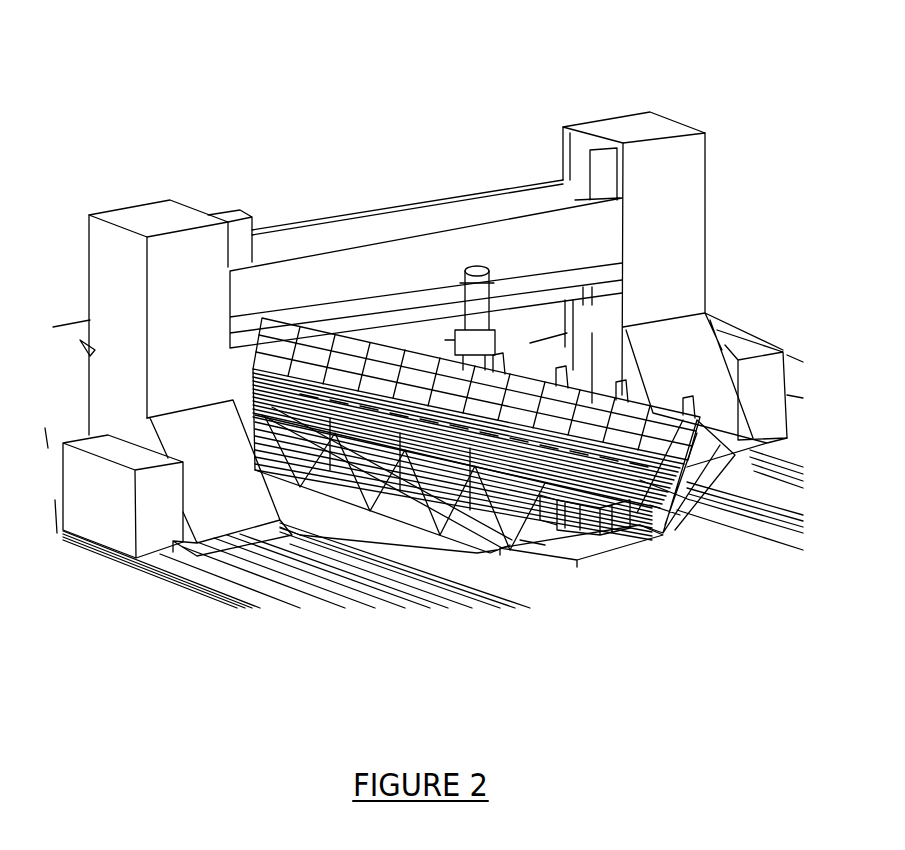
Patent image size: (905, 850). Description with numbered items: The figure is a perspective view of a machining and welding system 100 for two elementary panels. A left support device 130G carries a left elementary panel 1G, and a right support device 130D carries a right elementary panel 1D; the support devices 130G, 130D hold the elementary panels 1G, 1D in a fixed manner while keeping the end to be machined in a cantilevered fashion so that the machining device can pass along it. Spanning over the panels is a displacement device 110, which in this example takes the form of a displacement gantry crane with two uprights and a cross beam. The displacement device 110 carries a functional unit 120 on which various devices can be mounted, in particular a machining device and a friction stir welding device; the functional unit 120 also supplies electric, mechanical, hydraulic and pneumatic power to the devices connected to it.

The machining and welding system 100 is at (495, 91).
The displacement device 110 is at (347, 230).
The functional unit 120 is at (472, 308).
The left elementary panel 1G is at (493, 547).
The left support device 130G is at (569, 565).
The right support device 130D is at (644, 553).
The right elementary panel 1D is at (668, 500).